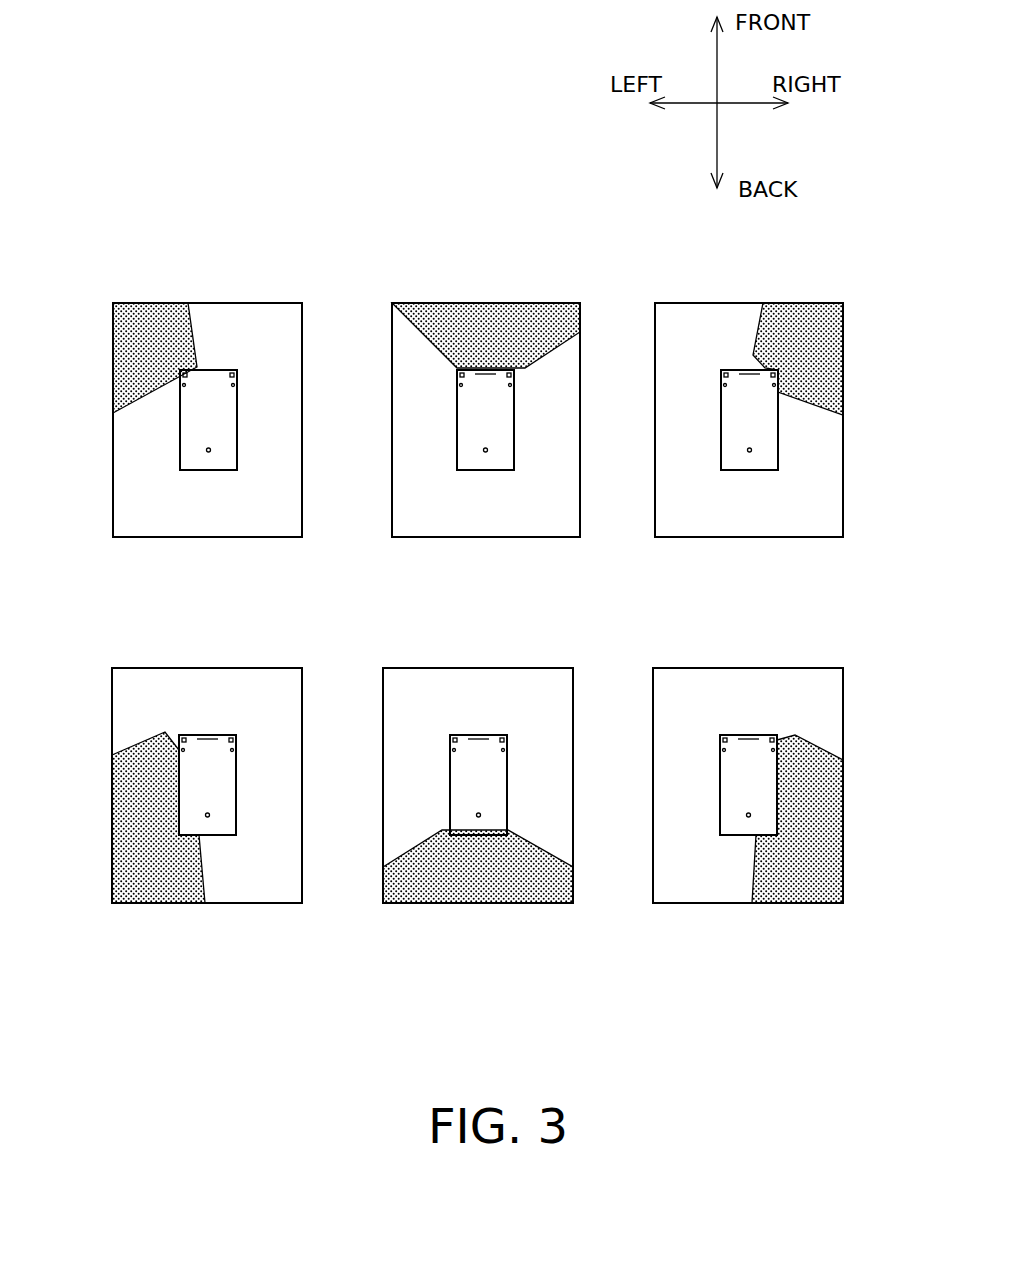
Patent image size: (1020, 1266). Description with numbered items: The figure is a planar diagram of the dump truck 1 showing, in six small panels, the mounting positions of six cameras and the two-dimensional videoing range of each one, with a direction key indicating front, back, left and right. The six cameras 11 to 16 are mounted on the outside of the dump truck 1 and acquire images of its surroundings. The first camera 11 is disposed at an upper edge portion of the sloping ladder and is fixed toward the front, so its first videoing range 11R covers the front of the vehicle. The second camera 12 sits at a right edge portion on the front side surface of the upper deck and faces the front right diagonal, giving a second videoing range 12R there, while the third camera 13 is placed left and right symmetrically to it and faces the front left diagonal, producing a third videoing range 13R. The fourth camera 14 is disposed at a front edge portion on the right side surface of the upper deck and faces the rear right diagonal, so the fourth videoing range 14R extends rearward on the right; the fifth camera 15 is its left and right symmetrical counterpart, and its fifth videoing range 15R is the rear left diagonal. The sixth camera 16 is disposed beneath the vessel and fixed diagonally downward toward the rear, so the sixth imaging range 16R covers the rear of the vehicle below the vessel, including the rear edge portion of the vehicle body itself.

The dump truck 1 is at (200, 425).
The first camera 11 is at (472, 368).
The first videoing range 11R is at (505, 318).
The second camera 12 is at (773, 368).
The second videoing range 12R is at (830, 340).
The third camera 13 is at (185, 368).
The third videoing range 13R is at (215, 290).
The fourth camera 14 is at (778, 750).
The fourth videoing range 14R is at (787, 883).
The fifth camera 15 is at (179, 750).
The fifth videoing range 15R is at (160, 892).
The sixth camera 16 is at (478, 817).
The sixth imaging range 16R is at (420, 887).